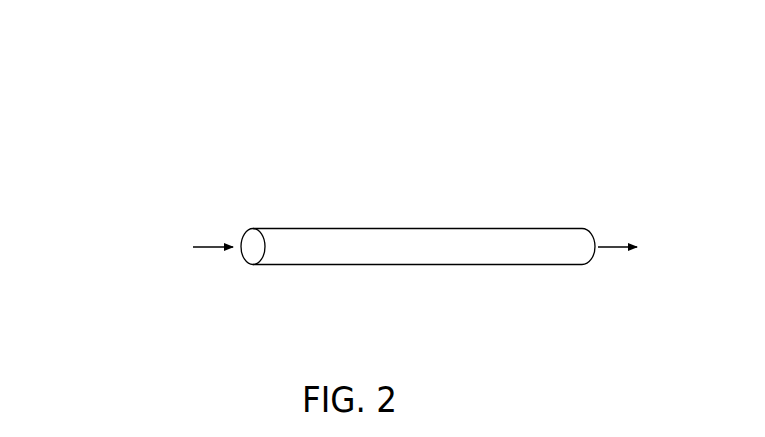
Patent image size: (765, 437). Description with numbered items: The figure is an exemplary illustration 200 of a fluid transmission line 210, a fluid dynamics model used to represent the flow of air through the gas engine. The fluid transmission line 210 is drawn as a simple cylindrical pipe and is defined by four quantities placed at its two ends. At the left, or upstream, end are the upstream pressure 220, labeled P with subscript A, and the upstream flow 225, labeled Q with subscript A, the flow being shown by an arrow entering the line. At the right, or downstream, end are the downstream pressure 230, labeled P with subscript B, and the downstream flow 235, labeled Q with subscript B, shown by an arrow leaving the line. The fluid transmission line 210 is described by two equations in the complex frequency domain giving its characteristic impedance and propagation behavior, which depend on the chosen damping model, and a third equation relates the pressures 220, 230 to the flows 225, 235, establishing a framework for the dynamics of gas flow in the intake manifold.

The exemplary illustration 200 is at (190, 103).
The fluid transmission line 210 is at (402, 212).
The upstream pressure 220 is at (217, 200).
The upstream flow 225 is at (156, 236).
The downstream pressure 230 is at (597, 208).
The downstream flow 235 is at (640, 267).